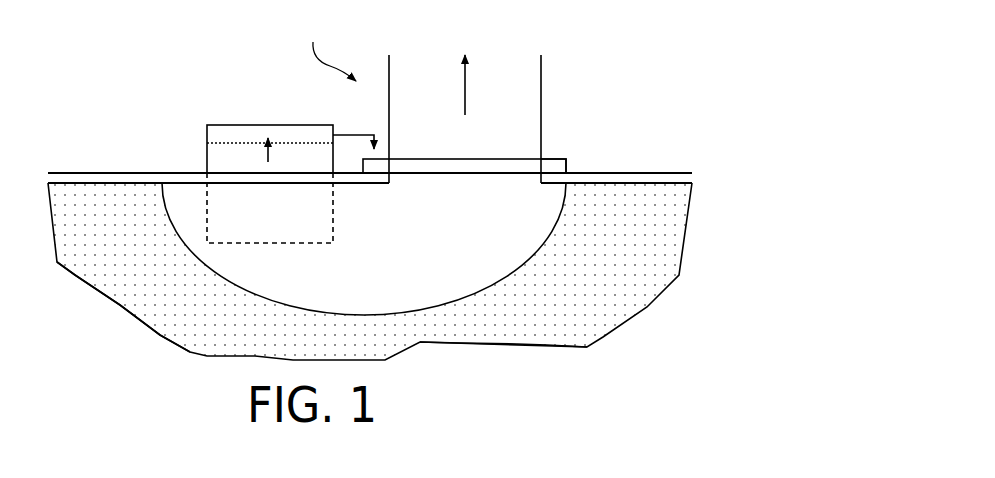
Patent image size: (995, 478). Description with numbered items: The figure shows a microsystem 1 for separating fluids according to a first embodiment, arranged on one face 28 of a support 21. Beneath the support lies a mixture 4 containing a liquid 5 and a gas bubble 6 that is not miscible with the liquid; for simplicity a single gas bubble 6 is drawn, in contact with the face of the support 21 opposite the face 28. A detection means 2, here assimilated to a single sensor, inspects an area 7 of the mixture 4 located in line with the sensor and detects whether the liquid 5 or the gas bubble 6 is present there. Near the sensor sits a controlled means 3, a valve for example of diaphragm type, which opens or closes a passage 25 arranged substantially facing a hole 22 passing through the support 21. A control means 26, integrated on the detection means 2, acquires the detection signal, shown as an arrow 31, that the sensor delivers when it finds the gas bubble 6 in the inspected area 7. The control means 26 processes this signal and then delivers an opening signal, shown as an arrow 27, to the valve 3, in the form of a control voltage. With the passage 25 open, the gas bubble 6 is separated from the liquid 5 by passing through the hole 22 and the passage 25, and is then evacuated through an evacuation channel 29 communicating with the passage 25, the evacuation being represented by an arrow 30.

The microsystem 1 is at (331, 48).
The detection means 2 is at (220, 158).
The controlled means 3 is at (553, 158).
The mixture 4 is at (654, 261).
The liquid 5 is at (555, 332).
The gas bubble 6 is at (425, 293).
The inspected area 7 is at (222, 227).
The support 21 is at (684, 177).
The hole 22 is at (438, 183).
The passage 25 is at (467, 168).
The control means 26 is at (234, 135).
The opening signal 27 is at (369, 133).
The face of the support 28 is at (643, 173).
The evacuation channel 29 is at (519, 70).
The evacuation arrow 30 is at (463, 72).
The detection signal 31 is at (268, 150).